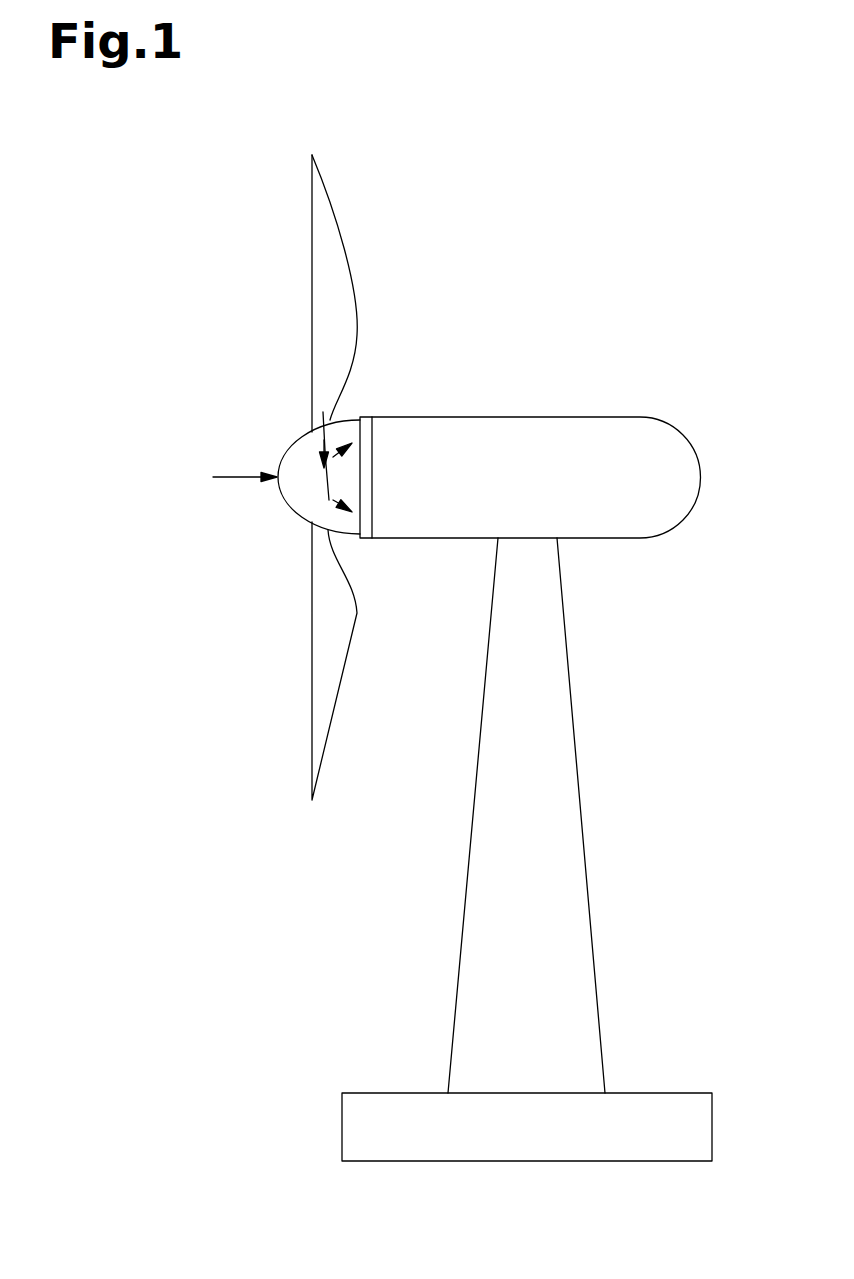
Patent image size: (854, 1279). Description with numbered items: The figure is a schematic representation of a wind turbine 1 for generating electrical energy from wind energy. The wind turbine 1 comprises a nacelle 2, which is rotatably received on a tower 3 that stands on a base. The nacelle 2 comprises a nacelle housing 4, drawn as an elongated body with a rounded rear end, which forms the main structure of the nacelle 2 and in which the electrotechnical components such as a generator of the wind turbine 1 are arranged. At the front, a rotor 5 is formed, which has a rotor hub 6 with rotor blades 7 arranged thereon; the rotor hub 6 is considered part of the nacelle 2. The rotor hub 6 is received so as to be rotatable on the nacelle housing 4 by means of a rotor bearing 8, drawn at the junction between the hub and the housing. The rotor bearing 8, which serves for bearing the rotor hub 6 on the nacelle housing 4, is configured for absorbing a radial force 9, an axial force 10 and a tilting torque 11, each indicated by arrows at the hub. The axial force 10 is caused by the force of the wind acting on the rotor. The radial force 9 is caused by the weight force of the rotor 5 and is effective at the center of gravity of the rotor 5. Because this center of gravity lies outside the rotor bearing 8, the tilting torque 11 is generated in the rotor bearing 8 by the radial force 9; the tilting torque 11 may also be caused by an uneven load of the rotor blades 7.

The wind turbine 1 is at (617, 195).
The nacelle 2 is at (598, 332).
The tower 3 is at (553, 772).
The nacelle housing 4 is at (597, 438).
The rotor 5 is at (276, 441).
The rotor hub 6 is at (317, 521).
The rotor blades 7 is at (338, 305).
The rotor bearing 8 is at (368, 413).
The radial force 9 is at (322, 440).
The axial force 10 is at (240, 475).
The tilting torque 11 is at (333, 500).